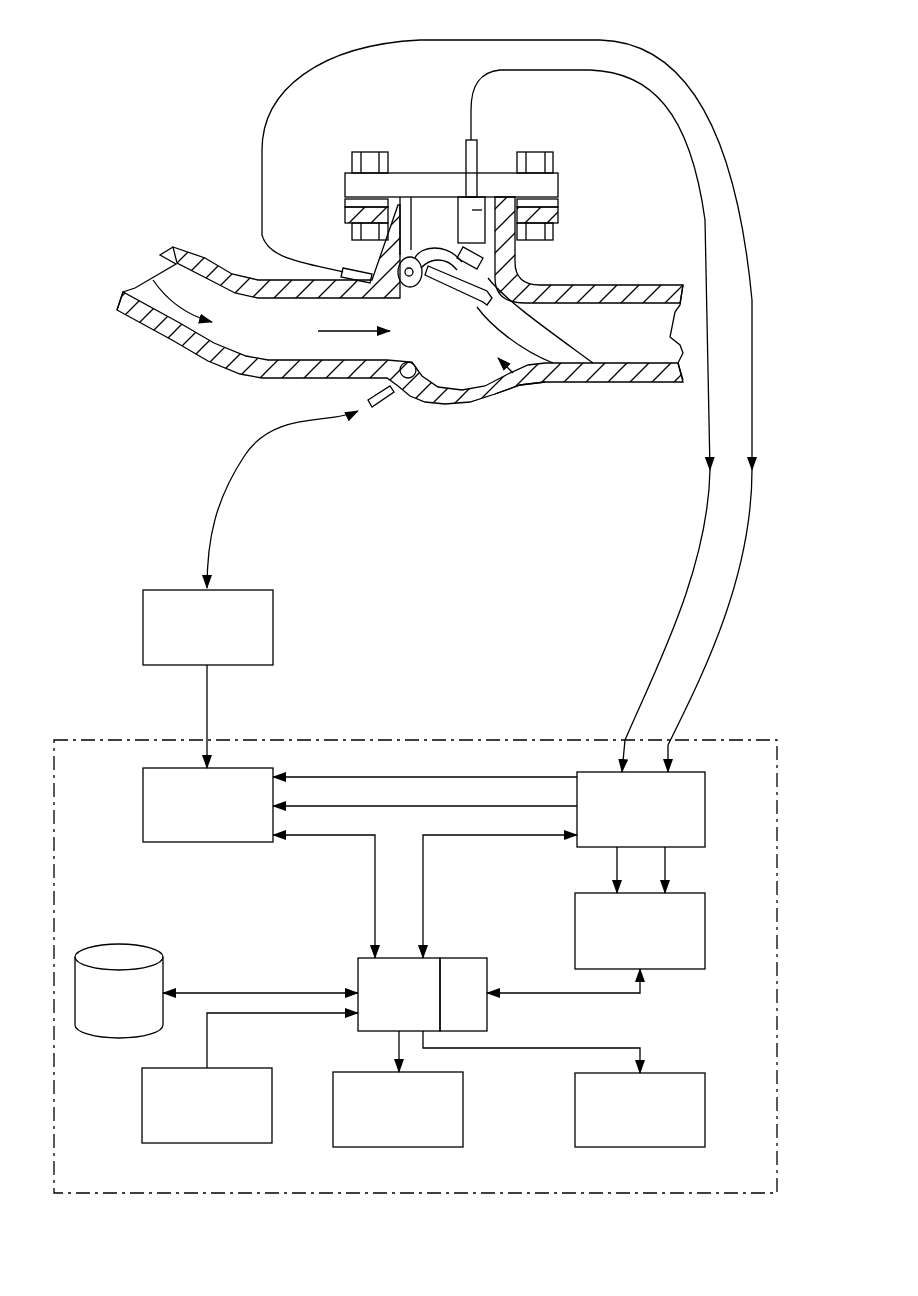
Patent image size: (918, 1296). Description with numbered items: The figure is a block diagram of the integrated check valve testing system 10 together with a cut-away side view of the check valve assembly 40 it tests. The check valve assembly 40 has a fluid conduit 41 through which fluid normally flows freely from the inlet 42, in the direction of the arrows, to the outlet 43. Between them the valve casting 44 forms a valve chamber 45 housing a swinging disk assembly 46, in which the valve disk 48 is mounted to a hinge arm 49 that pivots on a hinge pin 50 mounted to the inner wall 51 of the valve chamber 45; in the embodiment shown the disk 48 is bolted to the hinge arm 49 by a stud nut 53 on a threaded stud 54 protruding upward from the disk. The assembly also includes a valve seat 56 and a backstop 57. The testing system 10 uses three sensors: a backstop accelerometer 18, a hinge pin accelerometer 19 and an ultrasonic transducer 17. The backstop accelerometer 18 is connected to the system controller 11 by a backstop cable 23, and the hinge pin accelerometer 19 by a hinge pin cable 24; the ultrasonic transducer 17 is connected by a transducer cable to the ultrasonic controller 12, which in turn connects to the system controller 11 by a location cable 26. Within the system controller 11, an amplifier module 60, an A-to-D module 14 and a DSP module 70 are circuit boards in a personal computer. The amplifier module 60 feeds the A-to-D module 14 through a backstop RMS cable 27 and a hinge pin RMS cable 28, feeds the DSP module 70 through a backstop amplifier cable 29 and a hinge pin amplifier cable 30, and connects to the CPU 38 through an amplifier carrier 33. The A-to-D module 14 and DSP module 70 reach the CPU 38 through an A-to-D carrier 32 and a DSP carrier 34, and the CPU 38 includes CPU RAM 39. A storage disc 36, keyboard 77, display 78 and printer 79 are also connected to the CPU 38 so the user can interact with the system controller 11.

The integrated check valve testing system 10 is at (176, 181).
The system controller 11 is at (440, 716).
The ultrasonic controller 12 is at (143, 632).
The A-to-D module 14 is at (143, 806).
The ultrasonic transducer 17 is at (370, 400).
The backstop accelerometer 18 is at (470, 140).
The hinge pin accelerometer 19 is at (320, 276).
The backstop cable 23 is at (622, 698).
The hinge pin cable 24 is at (676, 698).
The location cable 26 is at (210, 705).
The backstop RMS cable 27 is at (372, 777).
The hinge pin RMS cable 28 is at (372, 806).
The backstop amplifier cable 29 is at (617, 860).
The hinge pin amplifier cable 30 is at (667, 862).
The A-to-D carrier 32 is at (373, 900).
The amplifier carrier 33 is at (425, 906).
The DSP carrier 34 is at (578, 993).
The storage disc 36 is at (112, 944).
The CPU 38 is at (358, 965).
The CPU RAM 39 is at (487, 970).
The check valve assembly 40 is at (331, 195).
The fluid conduit 41 is at (302, 388).
The inlet 42 is at (273, 346).
The outlet 43 is at (638, 349).
The valve casting 44 is at (515, 278).
The valve chamber 45 is at (523, 383).
The swinging disk assembly 46 is at (453, 297).
The valve disk 48 is at (551, 382).
The hinge arm 49 is at (430, 196).
The hinge pin 50 is at (388, 255).
The inner wall 51 is at (421, 197).
The stud nut 53 is at (590, 382).
The threaded stud 54 is at (448, 250).
The valve seat 56 is at (412, 385).
The backstop 57 is at (480, 210).
The amplifier module 60 is at (707, 790).
The DSP module 70 is at (705, 952).
The keyboard 77 is at (142, 1120).
The display 78 is at (463, 1085).
The printer 79 is at (705, 1102).